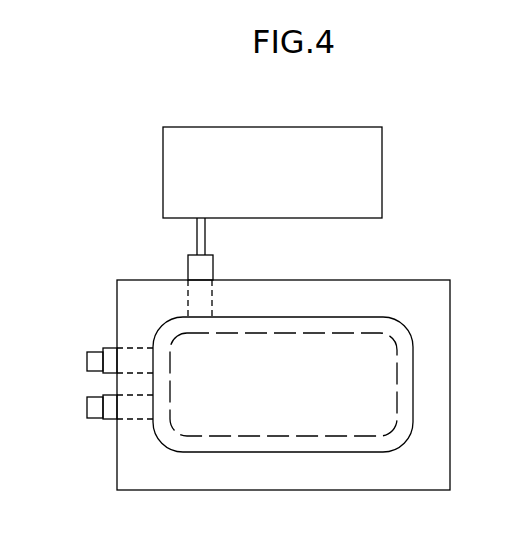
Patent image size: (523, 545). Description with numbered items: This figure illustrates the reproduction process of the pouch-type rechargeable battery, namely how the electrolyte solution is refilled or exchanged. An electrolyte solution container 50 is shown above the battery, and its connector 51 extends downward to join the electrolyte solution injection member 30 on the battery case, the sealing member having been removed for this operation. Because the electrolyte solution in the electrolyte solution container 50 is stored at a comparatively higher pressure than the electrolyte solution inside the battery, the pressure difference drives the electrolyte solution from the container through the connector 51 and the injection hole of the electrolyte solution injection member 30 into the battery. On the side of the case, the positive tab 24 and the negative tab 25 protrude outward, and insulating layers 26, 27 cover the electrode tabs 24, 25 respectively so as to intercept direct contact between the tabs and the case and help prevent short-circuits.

The electrolyte solution container 50 is at (376, 158).
The connector 51 is at (200, 235).
The electrolyte solution injection member 30 is at (193, 270).
The negative tab 25 is at (87, 362).
The insulating layer 27 is at (110, 352).
The positive tab 24 is at (87, 408).
The insulating layer 26 is at (110, 413).